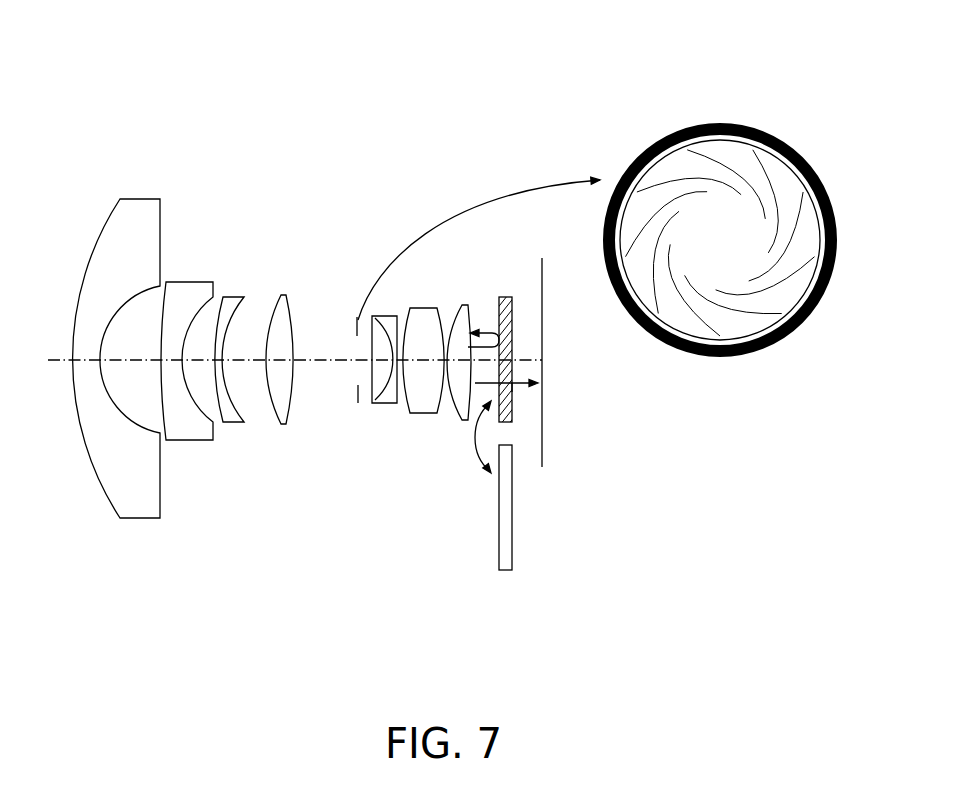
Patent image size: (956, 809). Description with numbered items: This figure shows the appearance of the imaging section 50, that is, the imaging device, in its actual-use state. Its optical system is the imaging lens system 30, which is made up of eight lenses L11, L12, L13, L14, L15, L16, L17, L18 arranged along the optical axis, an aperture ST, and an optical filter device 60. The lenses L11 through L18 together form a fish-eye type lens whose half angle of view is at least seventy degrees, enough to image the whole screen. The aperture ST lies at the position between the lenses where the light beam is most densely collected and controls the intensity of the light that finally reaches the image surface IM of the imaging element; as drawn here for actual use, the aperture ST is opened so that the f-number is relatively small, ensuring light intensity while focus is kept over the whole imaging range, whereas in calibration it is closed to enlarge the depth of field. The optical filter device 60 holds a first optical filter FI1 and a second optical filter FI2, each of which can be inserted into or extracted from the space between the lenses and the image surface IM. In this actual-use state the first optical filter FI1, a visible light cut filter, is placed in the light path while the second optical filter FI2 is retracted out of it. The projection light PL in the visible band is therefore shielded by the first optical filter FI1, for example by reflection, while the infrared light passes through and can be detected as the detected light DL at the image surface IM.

The imaging section 50 is at (398, 82).
The imaging lens system 30 is at (336, 210).
The optical filter device 60 is at (497, 582).
The aperture ST is at (357, 318).
The lens L11 is at (132, 202).
The lens L12 is at (182, 288).
The lens L13 is at (228, 302).
The lens L14 is at (283, 305).
The lens L15 is at (372, 380).
The lens L16 is at (385, 398).
The lens L17 is at (427, 308).
The lens L18 is at (465, 306).
The projection light PL is at (489, 332).
The first optical filter FI1 is at (504, 298).
The second optical filter FI2 is at (499, 533).
The image surface IM is at (571, 391).
The detected light DL is at (541, 474).